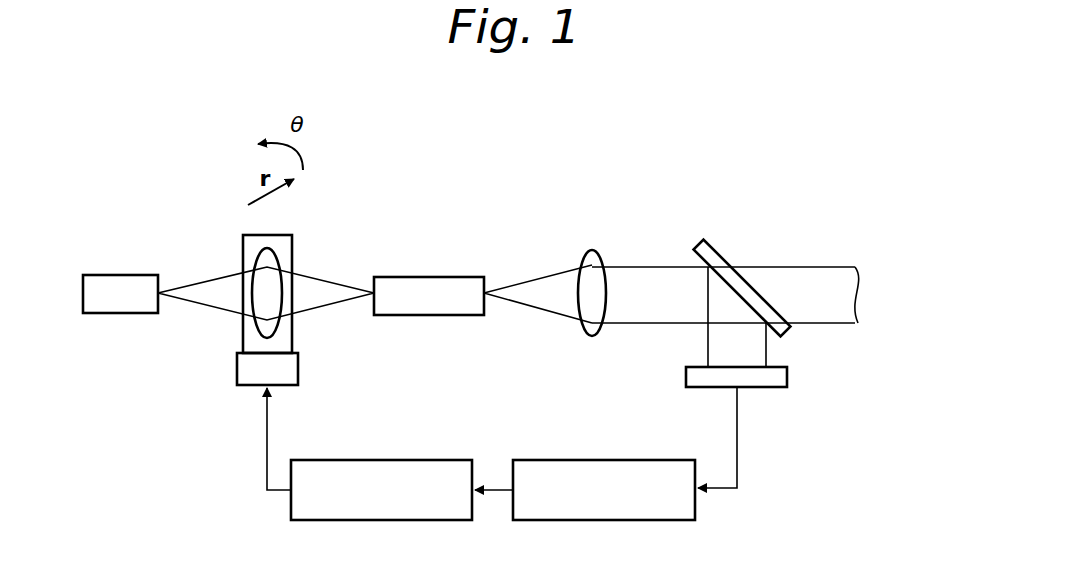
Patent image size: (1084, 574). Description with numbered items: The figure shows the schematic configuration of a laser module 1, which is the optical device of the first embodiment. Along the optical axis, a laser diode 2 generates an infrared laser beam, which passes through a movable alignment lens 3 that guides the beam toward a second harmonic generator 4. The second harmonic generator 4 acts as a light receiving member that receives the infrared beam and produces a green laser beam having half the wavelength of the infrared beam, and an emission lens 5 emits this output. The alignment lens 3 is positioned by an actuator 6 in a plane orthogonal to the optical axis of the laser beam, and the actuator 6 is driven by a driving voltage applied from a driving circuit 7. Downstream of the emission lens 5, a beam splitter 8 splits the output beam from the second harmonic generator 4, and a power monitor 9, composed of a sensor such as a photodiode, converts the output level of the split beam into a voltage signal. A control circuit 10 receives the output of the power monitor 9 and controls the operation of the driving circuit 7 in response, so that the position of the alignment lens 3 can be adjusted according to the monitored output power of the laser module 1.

The laser module 1 is at (178, 164).
The laser diode 2 is at (117, 275).
The movable alignment lens 3 is at (243, 250).
The second harmonic generator 4 is at (430, 277).
The emission lens 5 is at (592, 250).
The actuator 6 is at (237, 371).
The driving circuit 7 is at (380, 460).
The beam splitter 8 is at (722, 262).
The power monitor 9 is at (772, 387).
The control circuit 10 is at (601, 460).